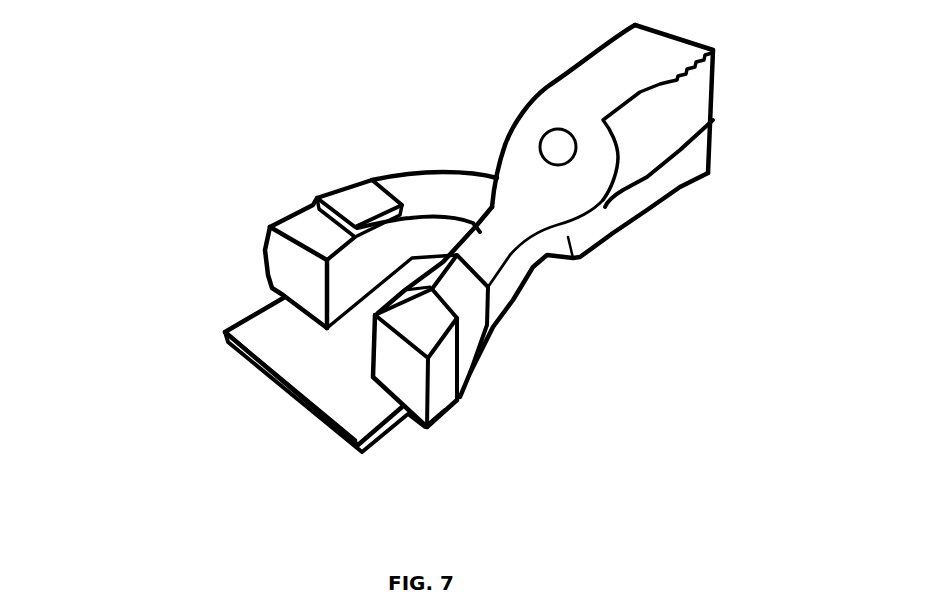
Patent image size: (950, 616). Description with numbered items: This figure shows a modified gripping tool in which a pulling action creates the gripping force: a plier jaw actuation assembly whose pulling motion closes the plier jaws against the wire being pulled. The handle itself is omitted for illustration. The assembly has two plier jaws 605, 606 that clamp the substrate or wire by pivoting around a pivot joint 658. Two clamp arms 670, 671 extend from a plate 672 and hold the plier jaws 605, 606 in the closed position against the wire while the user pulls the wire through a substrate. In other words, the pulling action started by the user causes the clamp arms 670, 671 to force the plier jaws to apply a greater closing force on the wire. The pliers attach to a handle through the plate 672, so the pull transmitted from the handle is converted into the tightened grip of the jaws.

The plier jaw 605 is at (602, 92).
The plier jaw 606 is at (680, 172).
The pivot joint 658 is at (555, 145).
The clamp arm 670 is at (360, 202).
The clamp arm 671 is at (463, 287).
The plate 672 is at (265, 338).